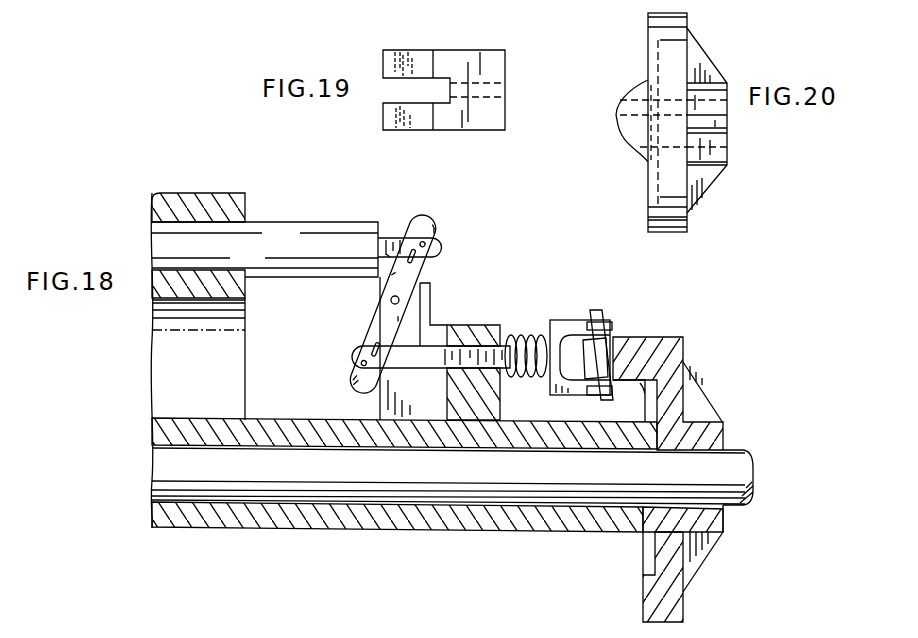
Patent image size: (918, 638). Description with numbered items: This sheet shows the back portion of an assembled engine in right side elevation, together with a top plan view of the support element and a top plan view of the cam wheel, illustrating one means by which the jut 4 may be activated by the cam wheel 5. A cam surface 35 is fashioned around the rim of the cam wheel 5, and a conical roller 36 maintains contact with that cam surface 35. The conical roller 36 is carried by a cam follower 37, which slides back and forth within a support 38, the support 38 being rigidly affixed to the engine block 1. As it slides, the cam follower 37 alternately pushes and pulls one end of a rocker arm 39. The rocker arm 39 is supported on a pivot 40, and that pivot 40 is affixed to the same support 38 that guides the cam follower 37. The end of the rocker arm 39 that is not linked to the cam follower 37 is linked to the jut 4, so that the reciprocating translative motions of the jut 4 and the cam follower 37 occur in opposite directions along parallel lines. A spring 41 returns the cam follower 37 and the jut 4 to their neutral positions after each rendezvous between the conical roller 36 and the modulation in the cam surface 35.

In FIG. 18, the engine block 1 is at (247, 219).
In FIG. 18, the jut 4 is at (281, 257).
In FIG. 18, the cam wheel 5 is at (652, 337).
In FIG. 20, the cam wheel 5 is at (687, 28).
In FIG. 18, the cam surface 35 is at (643, 609).
In FIG. 20, the cam surface 35 is at (648, 37).
In FIG. 18, the conical roller 36 is at (590, 397).
In FIG. 18, the cam follower 37 is at (556, 319).
In FIG. 18, the support 38 is at (380, 412).
In FIG. 19, the support 38 is at (462, 131).
In FIG. 18, the rocker arm 39 is at (370, 323).
In FIG. 18, the pivot 40 is at (390, 300).
In FIG. 18, the spring 41 is at (511, 339).